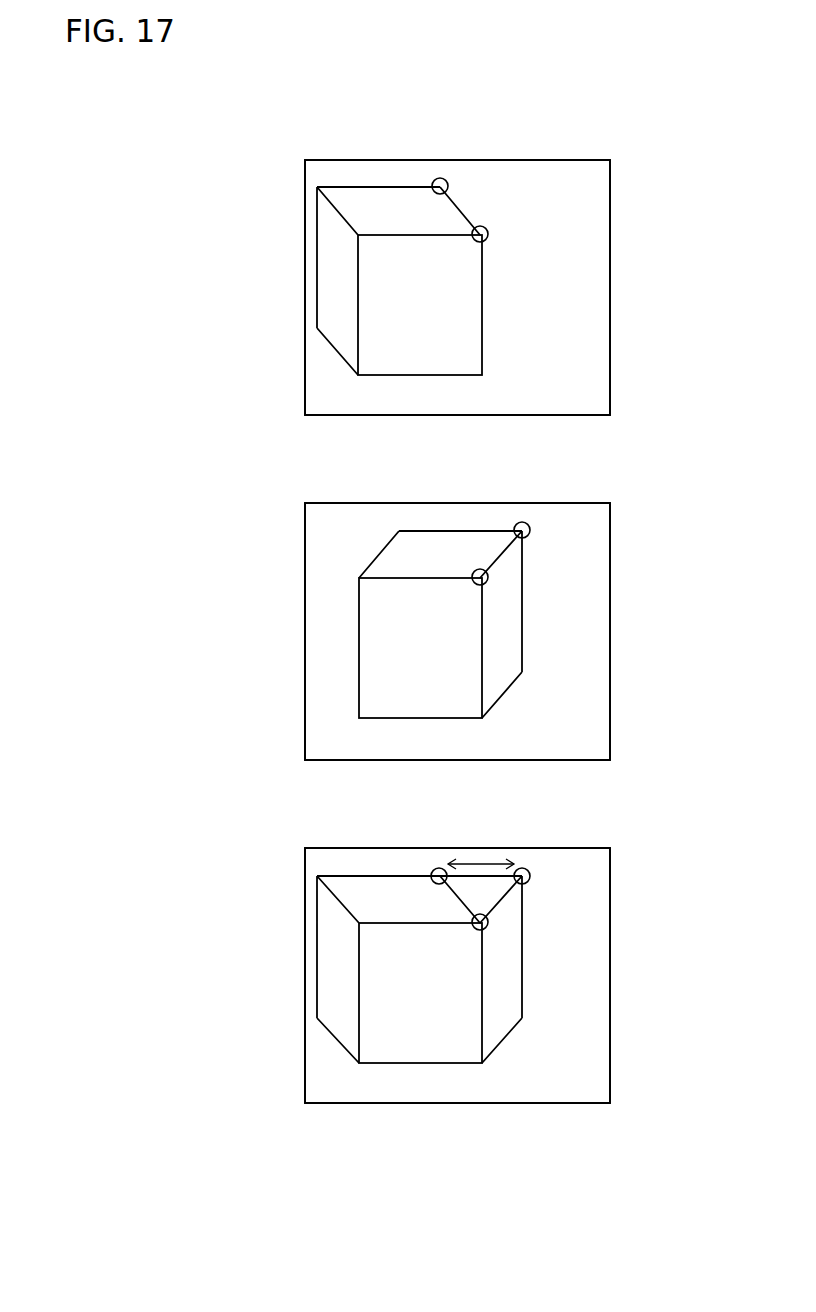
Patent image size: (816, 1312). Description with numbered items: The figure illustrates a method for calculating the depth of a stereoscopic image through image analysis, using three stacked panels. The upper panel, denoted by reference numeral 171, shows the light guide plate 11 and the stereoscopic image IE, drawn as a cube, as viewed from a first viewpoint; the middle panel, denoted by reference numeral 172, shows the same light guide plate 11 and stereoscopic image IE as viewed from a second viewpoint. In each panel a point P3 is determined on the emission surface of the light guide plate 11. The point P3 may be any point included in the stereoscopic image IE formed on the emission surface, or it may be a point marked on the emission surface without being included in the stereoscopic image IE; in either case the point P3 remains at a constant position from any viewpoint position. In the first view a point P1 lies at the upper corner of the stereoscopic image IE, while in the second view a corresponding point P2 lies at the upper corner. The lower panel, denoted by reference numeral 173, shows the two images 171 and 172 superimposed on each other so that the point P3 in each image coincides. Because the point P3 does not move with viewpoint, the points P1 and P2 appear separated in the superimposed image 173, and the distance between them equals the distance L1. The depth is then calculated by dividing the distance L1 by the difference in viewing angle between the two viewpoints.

The image viewed from viewpoint E1 171 is at (671, 152).
The image viewed from viewpoint E2 172 is at (671, 497).
The superimposed image 173 is at (671, 840).
The light guide plate 11 is at (610, 368).
The stereoscopic image IE is at (489, 289).
The point P1 is at (440, 178).
The point P2 is at (522, 522).
The point on the emission surface P3 is at (488, 233).
The distance L1 is at (480, 863).